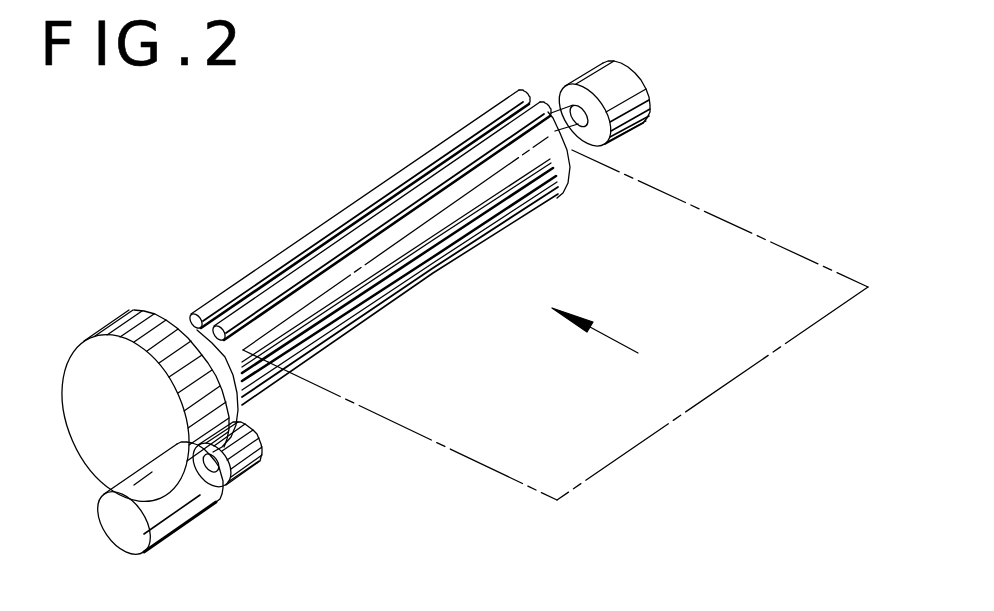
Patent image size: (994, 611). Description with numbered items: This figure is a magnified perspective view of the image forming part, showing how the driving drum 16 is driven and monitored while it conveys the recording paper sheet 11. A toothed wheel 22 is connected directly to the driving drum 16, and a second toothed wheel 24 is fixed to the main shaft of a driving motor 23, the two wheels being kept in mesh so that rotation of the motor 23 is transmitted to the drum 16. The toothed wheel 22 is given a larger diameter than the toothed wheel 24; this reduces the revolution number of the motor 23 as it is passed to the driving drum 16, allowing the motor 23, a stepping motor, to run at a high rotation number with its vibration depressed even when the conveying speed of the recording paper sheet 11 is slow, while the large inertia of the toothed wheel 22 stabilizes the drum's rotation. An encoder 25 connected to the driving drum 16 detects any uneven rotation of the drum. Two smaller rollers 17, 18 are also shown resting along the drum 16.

The recording paper sheet 11 is at (737, 222).
The driving drum 16 is at (258, 360).
The pinch roller 17 is at (410, 205).
The pinch roller 18 is at (295, 258).
The toothed wheel 22 is at (138, 314).
The driving motor 23 is at (182, 507).
The toothed wheel 24 is at (248, 458).
The encoder 25 is at (648, 83).